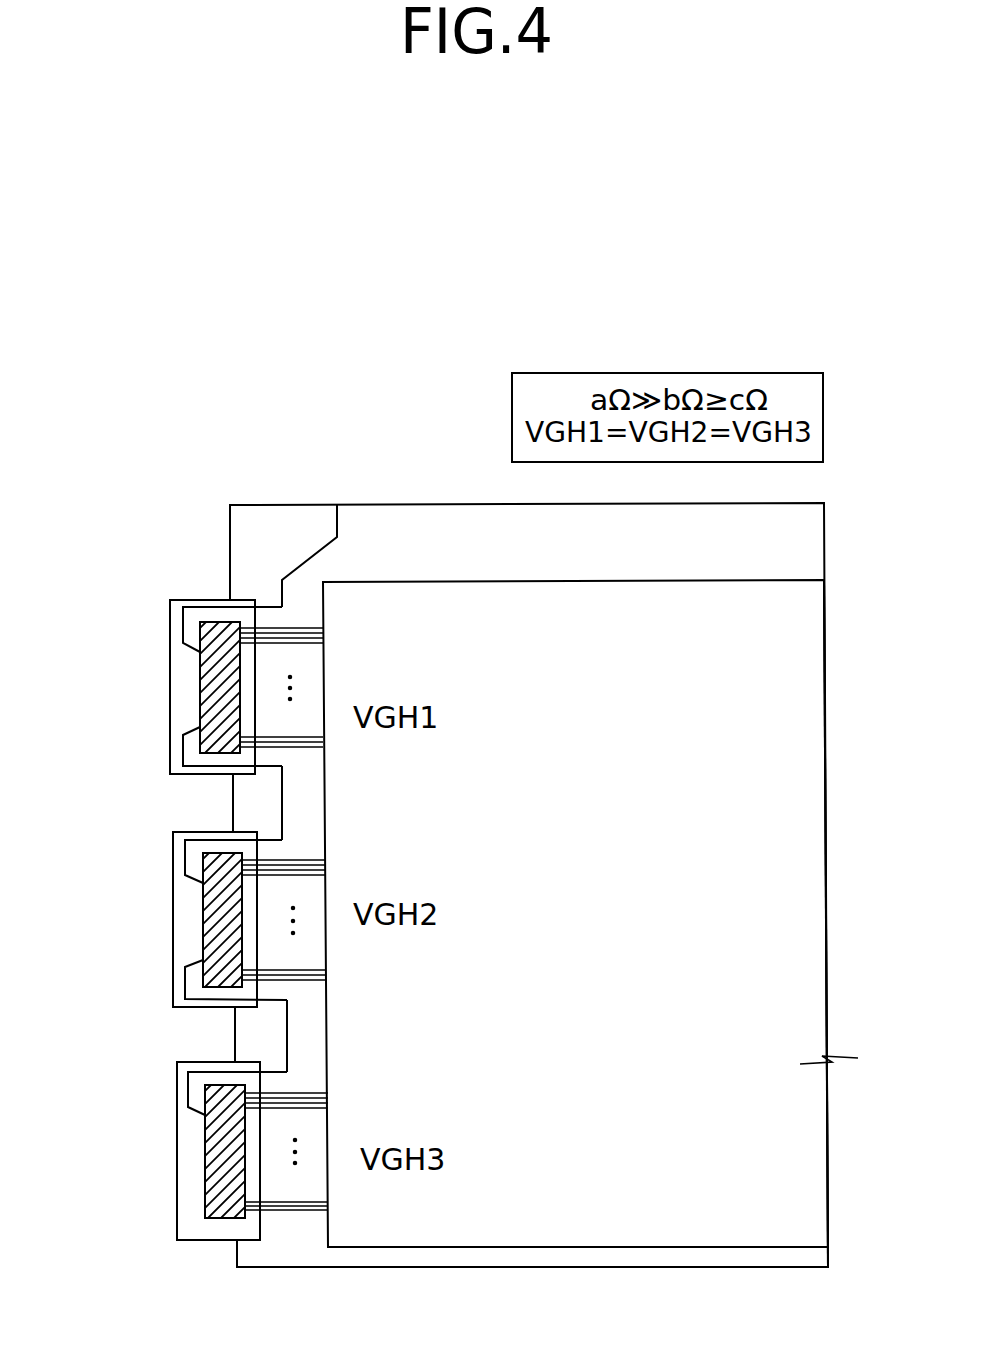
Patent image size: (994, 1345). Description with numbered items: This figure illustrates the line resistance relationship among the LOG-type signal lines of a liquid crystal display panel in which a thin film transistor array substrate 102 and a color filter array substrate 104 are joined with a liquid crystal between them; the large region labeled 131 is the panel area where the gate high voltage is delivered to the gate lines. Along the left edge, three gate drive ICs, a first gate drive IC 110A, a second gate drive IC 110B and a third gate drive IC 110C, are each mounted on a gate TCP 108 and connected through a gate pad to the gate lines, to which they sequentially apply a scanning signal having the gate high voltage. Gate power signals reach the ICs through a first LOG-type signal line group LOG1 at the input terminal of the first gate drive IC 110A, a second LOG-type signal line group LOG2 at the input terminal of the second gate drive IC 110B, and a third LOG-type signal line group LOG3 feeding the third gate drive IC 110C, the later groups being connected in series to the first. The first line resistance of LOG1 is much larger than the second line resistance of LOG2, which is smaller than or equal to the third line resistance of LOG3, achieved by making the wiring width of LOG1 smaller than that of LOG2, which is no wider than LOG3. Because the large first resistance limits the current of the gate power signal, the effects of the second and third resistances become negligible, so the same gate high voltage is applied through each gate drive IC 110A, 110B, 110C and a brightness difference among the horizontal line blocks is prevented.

The thin film transistor array substrate 102 is at (815, 560).
The color filter array substrate 104 is at (808, 625).
The gate TCP 108 is at (177, 652).
The first gate drive IC 110A is at (203, 713).
The second gate drive IC 110B is at (207, 942).
The third gate drive IC 110C is at (205, 1183).
The pixel array region 131 is at (627, 886).
The first LOG-type signal line group LOG1 is at (307, 557).
The second LOG-type signal line group LOG2 is at (282, 782).
The third LOG-type signal line group LOG3 is at (287, 1008).